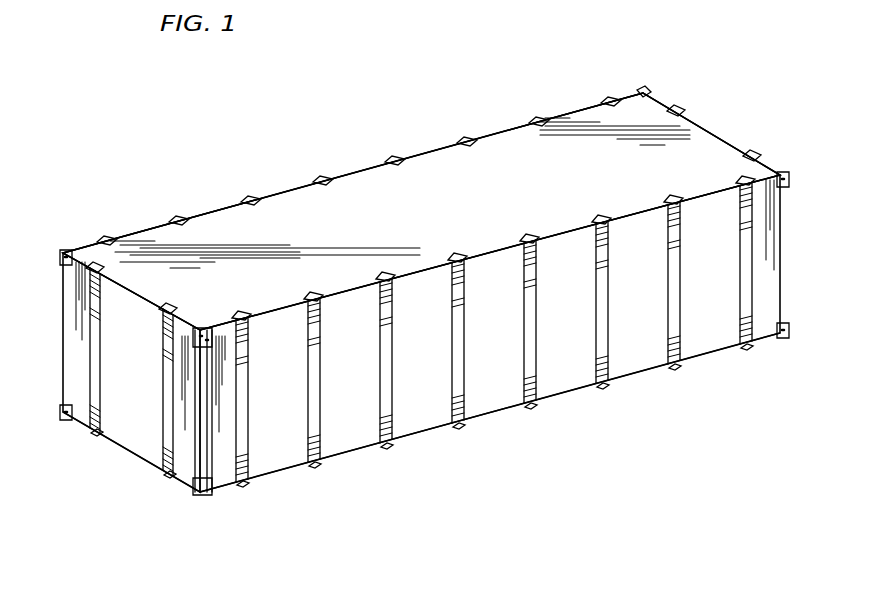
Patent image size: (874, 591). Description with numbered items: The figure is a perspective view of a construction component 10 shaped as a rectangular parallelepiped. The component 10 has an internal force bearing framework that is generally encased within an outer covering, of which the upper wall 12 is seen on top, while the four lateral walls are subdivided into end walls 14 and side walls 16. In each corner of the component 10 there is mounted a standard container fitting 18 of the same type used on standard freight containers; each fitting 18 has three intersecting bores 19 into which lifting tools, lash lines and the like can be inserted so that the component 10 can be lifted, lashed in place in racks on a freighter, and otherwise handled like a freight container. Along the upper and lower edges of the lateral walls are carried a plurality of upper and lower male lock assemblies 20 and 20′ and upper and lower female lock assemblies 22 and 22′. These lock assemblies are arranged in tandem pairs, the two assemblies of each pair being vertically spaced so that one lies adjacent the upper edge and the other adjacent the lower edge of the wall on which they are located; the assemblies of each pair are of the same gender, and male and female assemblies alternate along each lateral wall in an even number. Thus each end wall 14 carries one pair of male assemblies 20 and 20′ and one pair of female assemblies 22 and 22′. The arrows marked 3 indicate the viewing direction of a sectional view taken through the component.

The construction component 10 is at (437, 85).
The upper wall 12 is at (292, 198).
The end wall 14 is at (707, 130).
The side wall 16 is at (510, 128).
The standard container fitting 18 is at (643, 90).
The intersecting bore 19 is at (193, 346).
The upper male lock assembly 20 is at (760, 147).
The lower male lock assembly 20′ is at (88, 440).
The upper female lock assembly 22 is at (683, 102).
The lower female lock assembly 22′ is at (162, 485).
The section view indicator 3 is at (150, 182).